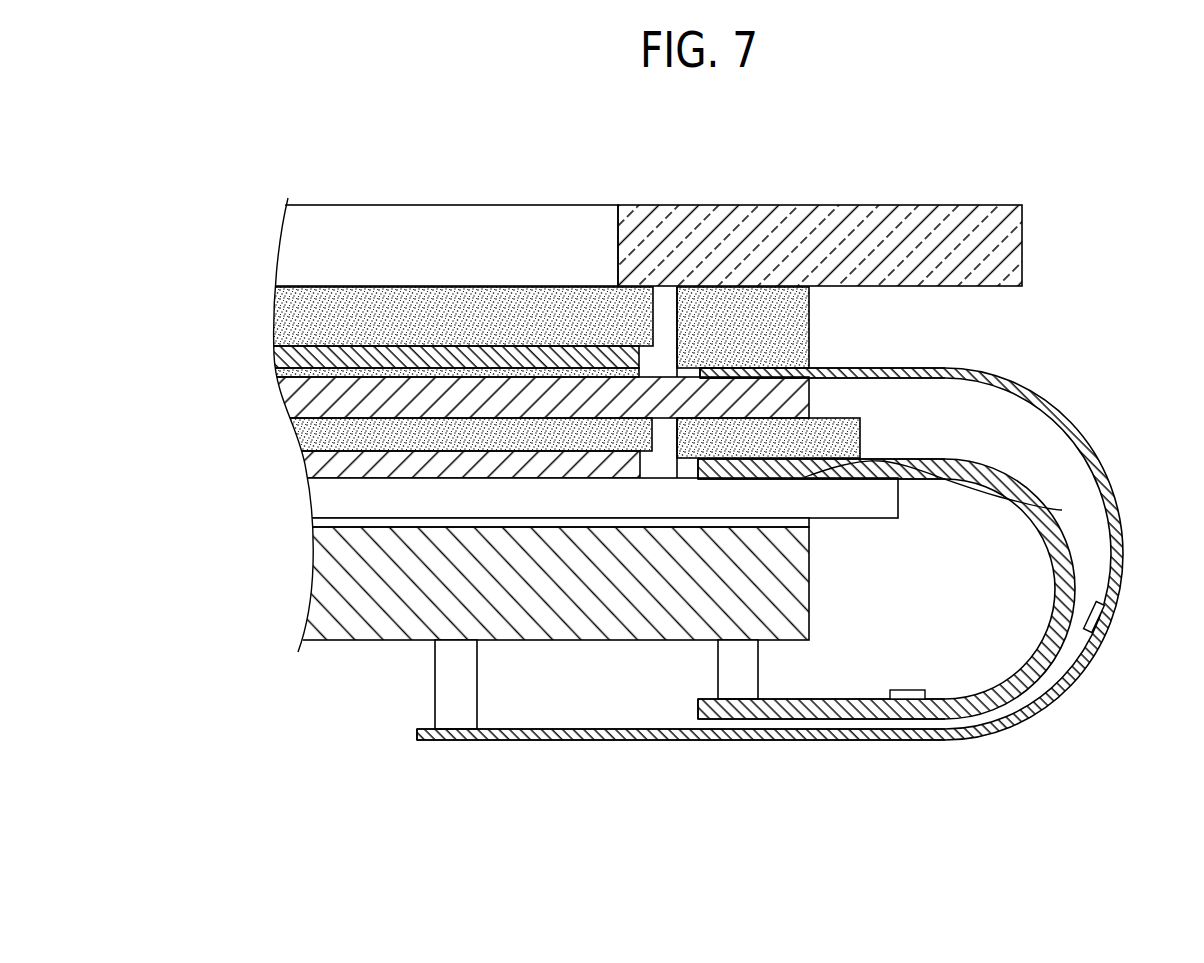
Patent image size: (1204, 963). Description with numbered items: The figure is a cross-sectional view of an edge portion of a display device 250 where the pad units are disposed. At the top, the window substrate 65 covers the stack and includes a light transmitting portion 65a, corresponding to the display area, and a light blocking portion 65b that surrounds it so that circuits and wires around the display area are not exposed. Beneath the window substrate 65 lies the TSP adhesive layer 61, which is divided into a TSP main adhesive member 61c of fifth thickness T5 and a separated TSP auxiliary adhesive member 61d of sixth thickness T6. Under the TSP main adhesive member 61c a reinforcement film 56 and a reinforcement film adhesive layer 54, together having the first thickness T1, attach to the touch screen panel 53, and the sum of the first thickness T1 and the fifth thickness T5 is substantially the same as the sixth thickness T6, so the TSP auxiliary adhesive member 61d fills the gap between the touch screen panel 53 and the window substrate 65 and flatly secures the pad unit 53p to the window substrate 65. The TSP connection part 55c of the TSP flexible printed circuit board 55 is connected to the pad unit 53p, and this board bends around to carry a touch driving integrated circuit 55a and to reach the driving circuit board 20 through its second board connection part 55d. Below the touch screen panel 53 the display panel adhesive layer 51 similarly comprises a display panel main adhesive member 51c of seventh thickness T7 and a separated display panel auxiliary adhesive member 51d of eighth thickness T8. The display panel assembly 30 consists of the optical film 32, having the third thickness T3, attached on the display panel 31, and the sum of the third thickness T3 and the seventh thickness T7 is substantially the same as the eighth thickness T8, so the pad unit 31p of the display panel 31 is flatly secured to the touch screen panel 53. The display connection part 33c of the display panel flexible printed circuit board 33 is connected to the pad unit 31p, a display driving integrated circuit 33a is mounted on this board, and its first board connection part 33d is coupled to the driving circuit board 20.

The display device 250 is at (968, 163).
The window substrate 65 is at (641, 205).
The light transmitting portion 65a is at (575, 236).
The light blocking portion 65b is at (660, 236).
The TSP adhesive layer 61 is at (534, 238).
The TSP main adhesive member 61c is at (447, 307).
The TSP auxiliary adhesive member 61d is at (757, 330).
The sixth thickness T6 is at (687, 372).
The fifth thickness T5 is at (276, 346).
The first thickness T1 is at (280, 368).
The reinforcement film 56 is at (300, 357).
The reinforcement film adhesive layer 54 is at (285, 372).
The touch screen panel 53 is at (305, 400).
The pad unit 53p is at (772, 372).
The TSP connection part 55c is at (753, 363).
The display panel adhesive layer 51 is at (680, 391).
The display panel main adhesive member 51c is at (597, 433).
The display panel auxiliary adhesive member 51d is at (790, 440).
The seventh thickness T7 is at (293, 418).
The third thickness T3 is at (308, 478).
The display panel assembly 30 is at (562, 512).
The optical film 32 is at (333, 500).
The display panel 31 is at (333, 522).
The pad unit 31p is at (1062, 510).
The driving circuit board 20 is at (341, 577).
The display connection part 33c is at (770, 462).
The eighth thickness T8 is at (684, 426).
The TSP flexible printed circuit board 55 is at (1124, 563).
The display panel flexible printed circuit board 33 is at (1056, 582).
The touch driving integrated circuit 55a is at (1106, 622).
The display driving integrated circuit 33a is at (913, 690).
The second board connection part 55d is at (422, 735).
The first board connection part 33d is at (810, 719).